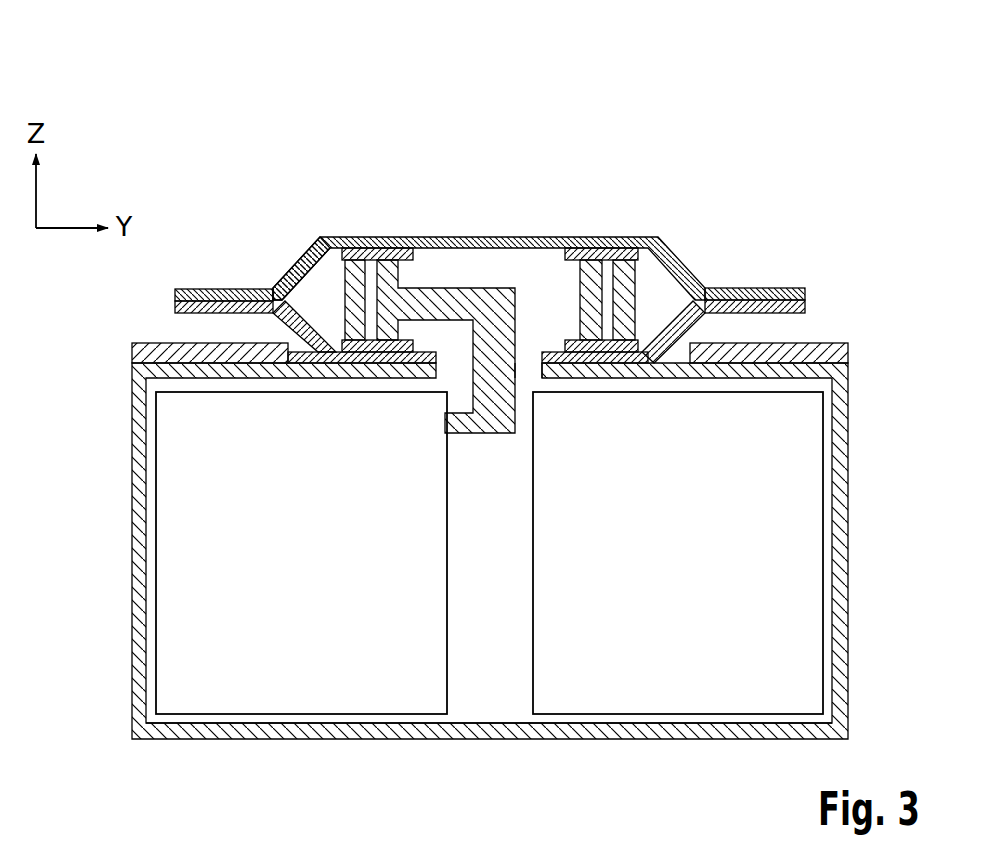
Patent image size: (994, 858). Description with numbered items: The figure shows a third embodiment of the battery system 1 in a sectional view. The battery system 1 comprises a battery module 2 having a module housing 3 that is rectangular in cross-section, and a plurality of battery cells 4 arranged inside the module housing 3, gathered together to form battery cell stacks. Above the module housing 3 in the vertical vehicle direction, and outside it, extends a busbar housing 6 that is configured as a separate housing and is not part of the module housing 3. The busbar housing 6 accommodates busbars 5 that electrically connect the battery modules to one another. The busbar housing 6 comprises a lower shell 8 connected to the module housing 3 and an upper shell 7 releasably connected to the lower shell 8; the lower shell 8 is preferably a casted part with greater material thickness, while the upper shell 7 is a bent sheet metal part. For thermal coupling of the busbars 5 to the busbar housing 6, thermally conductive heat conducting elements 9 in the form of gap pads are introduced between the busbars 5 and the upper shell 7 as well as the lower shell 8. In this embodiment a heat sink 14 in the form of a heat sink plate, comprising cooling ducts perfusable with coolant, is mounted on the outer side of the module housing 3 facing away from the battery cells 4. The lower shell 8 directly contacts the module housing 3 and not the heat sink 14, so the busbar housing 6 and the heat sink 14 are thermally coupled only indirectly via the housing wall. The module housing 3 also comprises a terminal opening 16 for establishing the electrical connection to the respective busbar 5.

The battery system 1 is at (184, 92).
The battery module 2 is at (118, 560).
The module housing 3 is at (490, 732).
The battery cell 4 is at (292, 693).
The busbar 5 is at (388, 283).
The busbar housing 6 is at (643, 224).
The upper shell 7 is at (300, 270).
The lower shell 8 is at (176, 307).
The heat conducting element 9 is at (587, 250).
The heat sink 14 is at (155, 349).
The terminal opening 16 is at (527, 373).